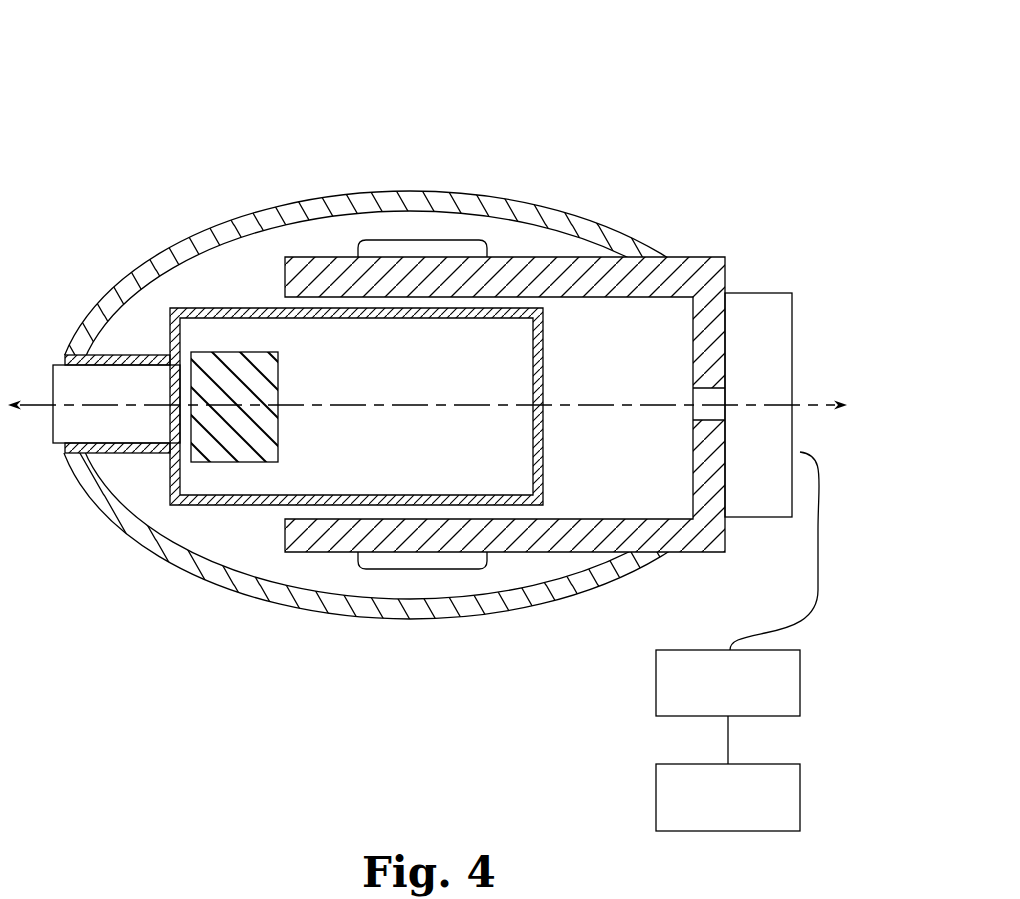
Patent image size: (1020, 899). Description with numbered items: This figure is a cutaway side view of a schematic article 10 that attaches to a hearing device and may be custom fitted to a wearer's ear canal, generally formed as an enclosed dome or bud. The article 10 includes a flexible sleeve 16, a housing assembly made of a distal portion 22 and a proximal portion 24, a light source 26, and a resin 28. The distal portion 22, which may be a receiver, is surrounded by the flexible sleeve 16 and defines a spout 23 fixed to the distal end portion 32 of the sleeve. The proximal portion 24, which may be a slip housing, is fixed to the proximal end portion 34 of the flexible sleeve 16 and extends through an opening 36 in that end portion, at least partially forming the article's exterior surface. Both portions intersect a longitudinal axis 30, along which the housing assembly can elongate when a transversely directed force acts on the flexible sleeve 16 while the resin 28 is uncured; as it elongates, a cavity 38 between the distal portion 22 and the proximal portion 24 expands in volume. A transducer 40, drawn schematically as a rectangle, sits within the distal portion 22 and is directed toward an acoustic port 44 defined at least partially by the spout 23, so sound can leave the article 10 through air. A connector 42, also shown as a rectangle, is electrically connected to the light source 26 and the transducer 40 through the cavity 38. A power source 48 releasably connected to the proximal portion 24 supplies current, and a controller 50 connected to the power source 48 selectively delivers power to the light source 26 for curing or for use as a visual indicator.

The article 10 is at (180, 72).
The flexible sleeve 16 is at (135, 268).
The distal portion 22 is at (222, 512).
The spout 23 is at (128, 455).
The proximal portion 24 is at (566, 560).
The light source 26 is at (425, 250).
The resin 28 is at (530, 237).
The longitudinal axis 30 is at (797, 405).
The distal end portion 32 is at (64, 316).
The proximal end portion 34 is at (670, 243).
The opening 36 is at (720, 335).
The cavity 38 is at (675, 370).
The transducer 40 is at (240, 352).
The connector 42 is at (806, 456).
The acoustic port 44 is at (72, 426).
The power source 48 is at (800, 683).
The controller 50 is at (800, 797).